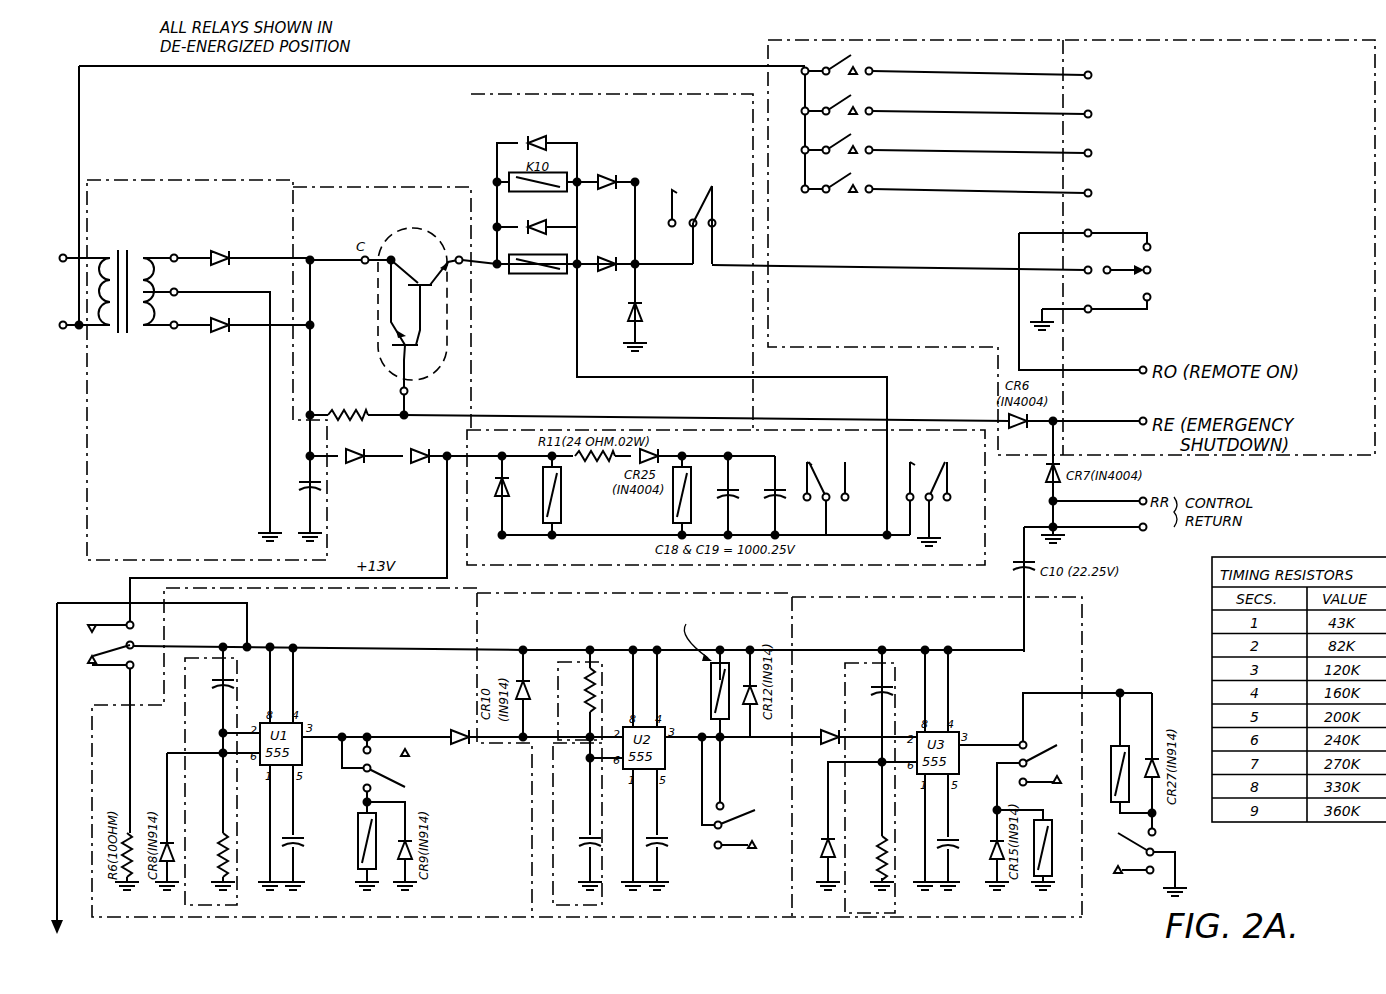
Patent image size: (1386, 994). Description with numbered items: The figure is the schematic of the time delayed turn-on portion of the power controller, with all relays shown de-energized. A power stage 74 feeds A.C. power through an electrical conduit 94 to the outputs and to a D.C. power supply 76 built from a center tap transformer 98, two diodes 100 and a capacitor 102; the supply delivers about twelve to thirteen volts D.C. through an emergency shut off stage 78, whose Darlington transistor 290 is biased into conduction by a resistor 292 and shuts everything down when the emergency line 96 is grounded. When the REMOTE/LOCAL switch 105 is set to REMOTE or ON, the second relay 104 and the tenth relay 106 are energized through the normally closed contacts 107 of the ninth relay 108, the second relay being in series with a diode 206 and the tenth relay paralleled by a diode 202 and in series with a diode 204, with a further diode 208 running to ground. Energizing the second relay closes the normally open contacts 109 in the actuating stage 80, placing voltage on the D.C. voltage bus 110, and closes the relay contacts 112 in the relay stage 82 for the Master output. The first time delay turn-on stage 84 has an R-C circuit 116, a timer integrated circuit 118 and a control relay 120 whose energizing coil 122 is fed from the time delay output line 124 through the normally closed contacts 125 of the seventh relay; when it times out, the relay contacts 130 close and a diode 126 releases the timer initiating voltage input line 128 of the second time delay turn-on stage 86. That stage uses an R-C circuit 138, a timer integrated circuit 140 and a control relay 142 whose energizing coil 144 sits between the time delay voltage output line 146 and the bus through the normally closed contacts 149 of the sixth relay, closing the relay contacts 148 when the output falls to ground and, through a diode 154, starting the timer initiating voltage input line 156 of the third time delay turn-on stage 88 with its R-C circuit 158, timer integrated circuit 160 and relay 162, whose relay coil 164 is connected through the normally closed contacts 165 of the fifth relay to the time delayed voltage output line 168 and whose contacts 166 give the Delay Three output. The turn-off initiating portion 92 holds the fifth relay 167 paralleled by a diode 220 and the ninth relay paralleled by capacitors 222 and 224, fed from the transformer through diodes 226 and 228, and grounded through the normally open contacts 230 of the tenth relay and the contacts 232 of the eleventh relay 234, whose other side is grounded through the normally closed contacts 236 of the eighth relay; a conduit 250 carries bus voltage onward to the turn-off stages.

The power stage 74 is at (64, 290).
The D.C. power supply 76 is at (219, 174).
The emergency shut off stage 78 is at (374, 181).
The actuating stage 80 is at (470, 114).
The relay stage 82 is at (767, 52).
The first time delay turn-on stage 84 is at (449, 582).
The second time delay turn-on stage 86 is at (654, 593).
The third time delay turn-on stage 88 is at (905, 593).
The turn-off initiating portion 92 is at (987, 515).
The electrical conduit 94 is at (671, 65).
The emergency line 96 is at (554, 408).
The center tap transformer 98 is at (120, 347).
The diodes 100 is at (231, 268).
The capacitor 102 is at (320, 496).
The relay K2 104 is at (510, 277).
The REMOTE/LOCAL switch 105 is at (1172, 233).
The relay K10 106 is at (576, 187).
The normally closed contacts of relay K9 107 is at (713, 180).
The relay K9 108 is at (670, 517).
The normally open K2 contacts 109 is at (105, 615).
The D.C. voltage bus 110 is at (408, 642).
The K2 relay contacts 112 is at (846, 68).
The R-C circuit 116 is at (185, 736).
The type 555 integrated circuit 118 is at (297, 765).
The control relay K1 120 is at (350, 884).
The energizing coil of relay K1 122 is at (351, 807).
The time delay output line 124 is at (336, 724).
The normally closed contacts of relay K7 125 is at (410, 773).
The diode 126 is at (455, 723).
The timer initiating voltage input line 128 is at (530, 743).
The contacts of relay K1 130 is at (846, 107).
The R-C circuit 138 is at (604, 900).
The type 555 integrated circuit 140 is at (671, 763).
The control relay K3 142 is at (709, 669).
The energizing coil of relay K3 144 is at (709, 681).
The time delay voltage output line 146 is at (710, 720).
The contacts of relay K3 148 is at (846, 146).
The normally closed contacts of relay K6 149 is at (765, 847).
The diode 154 is at (814, 747).
The timer initiating voltage input line 156 is at (840, 763).
The R-C circuit 158 is at (845, 674).
The type 555 integrated circuit 160 is at (958, 776).
The relay K4 162 is at (1069, 807).
The relay coil of K4 164 is at (1057, 878).
The normally closed contacts of relay K5 165 is at (1069, 734).
The contacts of relay K4 166 is at (846, 185).
The relay K5 167 is at (538, 480).
The time delayed voltage output line 168 is at (998, 742).
The diode 202 is at (556, 145).
The diode 204 is at (624, 182).
The diode 206 is at (541, 248).
The diode 208 is at (628, 318).
The diode 220 is at (522, 490).
The capacitor 222 is at (722, 509).
The capacitor 224 is at (770, 509).
The diode 226 is at (361, 450).
The diode 228 is at (443, 462).
The normally open contacts of relay K10 230 is at (818, 463).
The normally open contacts of relay K11 232 is at (922, 469).
The relay K11 234 is at (1105, 752).
The normally closed contacts of relay K8 236 is at (1108, 840).
The conduit 250 is at (60, 698).
The Darlington transistor 290 is at (378, 297).
The resistor 292 is at (407, 415).